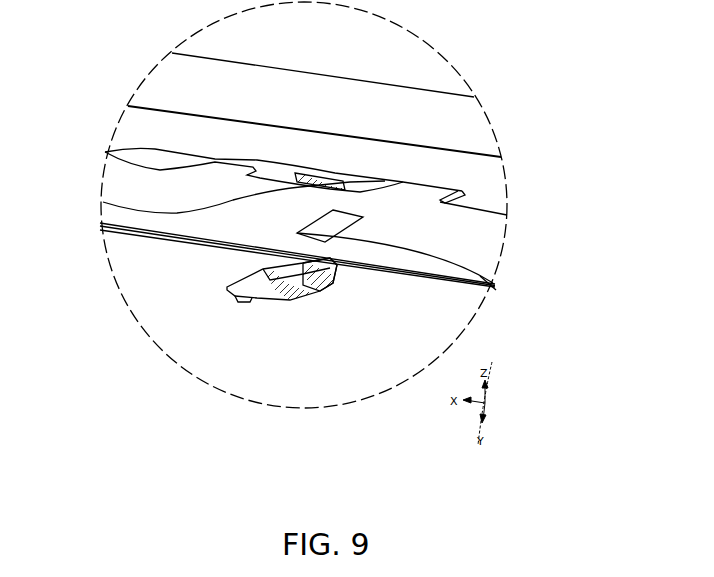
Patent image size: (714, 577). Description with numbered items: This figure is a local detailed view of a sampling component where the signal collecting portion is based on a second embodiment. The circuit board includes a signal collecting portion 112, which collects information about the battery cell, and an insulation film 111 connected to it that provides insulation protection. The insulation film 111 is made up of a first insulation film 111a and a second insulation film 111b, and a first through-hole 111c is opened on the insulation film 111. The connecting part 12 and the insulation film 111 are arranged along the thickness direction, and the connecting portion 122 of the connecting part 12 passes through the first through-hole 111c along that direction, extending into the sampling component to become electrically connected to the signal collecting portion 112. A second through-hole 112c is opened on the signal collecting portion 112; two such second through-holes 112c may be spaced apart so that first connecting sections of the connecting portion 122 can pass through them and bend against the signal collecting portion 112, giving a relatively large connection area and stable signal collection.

The insulation film 111 is at (578, 131).
The first insulation film 111a is at (501, 231).
The second insulation film 111b is at (486, 138).
The first through-hole 111c is at (488, 284).
The signal collecting portion 112 is at (108, 156).
The second through-hole 112c is at (104, 202).
The connecting part 12 is at (274, 299).
The connecting portion 122 is at (325, 277).